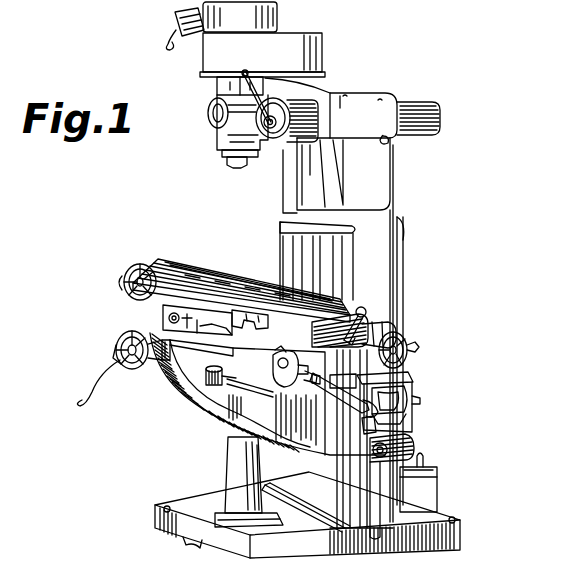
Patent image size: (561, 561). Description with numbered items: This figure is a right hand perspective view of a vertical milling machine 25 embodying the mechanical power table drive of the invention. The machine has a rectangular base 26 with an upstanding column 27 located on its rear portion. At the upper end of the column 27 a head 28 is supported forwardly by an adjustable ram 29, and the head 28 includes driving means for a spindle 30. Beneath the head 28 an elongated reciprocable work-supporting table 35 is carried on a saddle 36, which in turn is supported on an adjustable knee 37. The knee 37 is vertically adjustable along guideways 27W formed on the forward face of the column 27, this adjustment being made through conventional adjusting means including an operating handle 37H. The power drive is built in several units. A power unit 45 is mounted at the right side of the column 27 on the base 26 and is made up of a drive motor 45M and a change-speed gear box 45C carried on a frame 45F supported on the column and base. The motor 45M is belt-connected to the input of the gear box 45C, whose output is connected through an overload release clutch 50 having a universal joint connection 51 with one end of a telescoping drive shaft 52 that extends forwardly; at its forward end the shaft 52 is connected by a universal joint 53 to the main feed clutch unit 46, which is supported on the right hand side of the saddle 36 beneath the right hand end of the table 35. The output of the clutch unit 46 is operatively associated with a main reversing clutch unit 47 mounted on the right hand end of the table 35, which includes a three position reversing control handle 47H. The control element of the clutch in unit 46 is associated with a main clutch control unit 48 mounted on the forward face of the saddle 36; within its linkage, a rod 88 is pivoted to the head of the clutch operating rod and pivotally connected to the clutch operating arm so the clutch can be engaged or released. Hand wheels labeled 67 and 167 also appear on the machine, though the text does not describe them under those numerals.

The vertical milling machine 25 is at (420, 213).
The rectangular base 26 is at (420, 538).
The column 27 is at (378, 265).
The guideways 27W is at (322, 460).
The head 28 is at (307, 62).
The adjustable ram 29 is at (413, 104).
The spindle 30 is at (230, 167).
The work-supporting table 35 is at (220, 262).
The saddle 36 is at (238, 307).
The adjustable knee 37 is at (197, 413).
The operating handle 37H is at (118, 352).
The power unit 45 is at (420, 417).
The change-speed gear box 45C is at (417, 387).
The frame 45F is at (390, 496).
The drive motor 45M is at (413, 449).
The main feed clutch unit 46 is at (285, 380).
The main reversing clutch unit 47 is at (378, 327).
The three position reversing control handle 47H is at (367, 310).
The main clutch control unit 48 is at (158, 315).
The overload release clutch 50 is at (360, 433).
The universal joint connection 51 is at (365, 412).
The telescoping drive shaft 52 is at (349, 372).
The universal joint 53 is at (302, 404).
The table handwheel 67 is at (133, 267).
The rod 88 is at (226, 370).
The power feed handwheel 167 is at (410, 343).